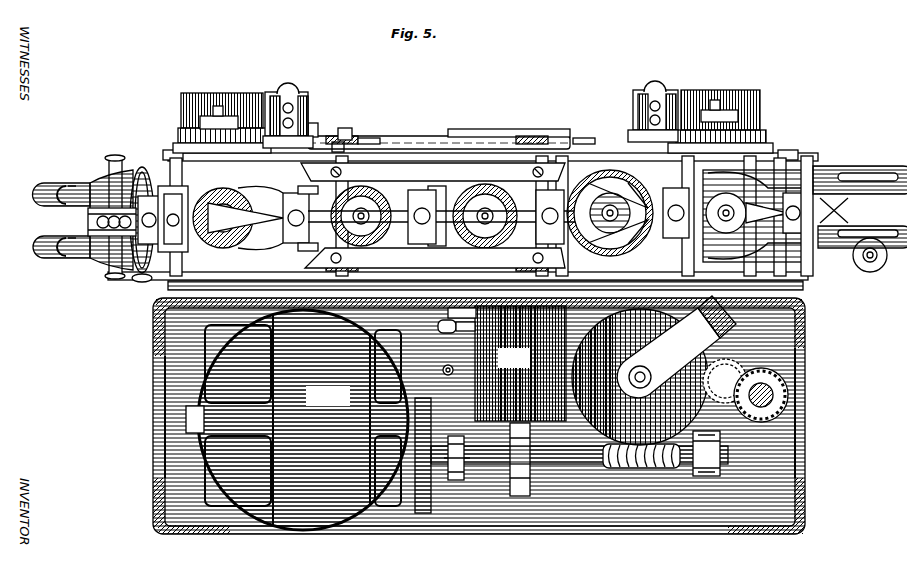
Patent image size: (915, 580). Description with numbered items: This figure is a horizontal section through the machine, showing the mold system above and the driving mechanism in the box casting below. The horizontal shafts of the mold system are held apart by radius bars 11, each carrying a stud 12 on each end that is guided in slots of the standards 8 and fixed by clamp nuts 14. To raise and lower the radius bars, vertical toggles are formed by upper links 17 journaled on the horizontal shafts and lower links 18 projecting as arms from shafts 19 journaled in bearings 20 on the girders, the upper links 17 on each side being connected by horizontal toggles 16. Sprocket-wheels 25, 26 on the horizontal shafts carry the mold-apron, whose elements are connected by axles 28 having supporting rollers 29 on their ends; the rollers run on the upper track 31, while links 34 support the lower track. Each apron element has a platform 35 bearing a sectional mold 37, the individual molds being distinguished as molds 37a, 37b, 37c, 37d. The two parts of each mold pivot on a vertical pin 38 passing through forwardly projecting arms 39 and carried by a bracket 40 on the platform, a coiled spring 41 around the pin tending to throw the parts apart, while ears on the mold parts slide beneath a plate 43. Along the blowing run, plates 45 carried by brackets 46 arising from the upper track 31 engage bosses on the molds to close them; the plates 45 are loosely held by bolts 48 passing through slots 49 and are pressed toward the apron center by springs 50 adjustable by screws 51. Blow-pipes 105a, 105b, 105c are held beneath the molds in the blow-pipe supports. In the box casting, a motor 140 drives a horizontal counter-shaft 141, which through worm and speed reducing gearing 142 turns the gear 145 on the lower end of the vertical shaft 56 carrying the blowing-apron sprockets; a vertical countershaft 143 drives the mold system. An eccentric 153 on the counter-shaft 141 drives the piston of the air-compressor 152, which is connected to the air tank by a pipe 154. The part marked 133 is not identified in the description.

The standards 8 is at (184, 120).
The radius bars 11 is at (168, 143).
The stud 12 is at (210, 105).
The clamp nuts 14 is at (224, 112).
The horizontal toggles 16 is at (440, 128).
The upper links 17 is at (368, 128).
The lower links 18 is at (643, 122).
The shafts 19 is at (471, 93).
The bearings 20 is at (312, 128).
The sprocket-wheel 25 is at (479, 416).
The sprocket-wheel 26 is at (140, 147).
The axles 28 is at (108, 276).
The supporting rollers 29 is at (108, 147).
The upper track 31 is at (497, 140).
The links 34 is at (152, 140).
The platform 35 is at (434, 212).
The sectional mold 37 is at (58, 250).
The sectional mold 37a is at (435, 258).
The sectional mold 37b is at (470, 238).
The sectional mold 37c is at (862, 158).
The sectional mold 37d is at (733, 221).
The vertical pin 38 is at (78, 210).
The forwardly projecting arms 39 is at (262, 200).
The bracket 40 is at (152, 219).
The coiled spring 41 is at (170, 212).
The plate 43 is at (238, 218).
The plates 45 is at (438, 216).
The brackets 46 is at (356, 128).
The bolts 48 is at (433, 172).
The slots 49 is at (391, 173).
The springs 50 is at (350, 110).
The screws 51 is at (343, 128).
The vertical shaft 56 is at (784, 388).
The blow-pipe 105a is at (356, 230).
The blow-pipe 105b is at (476, 195).
The blow-pipe 105c is at (862, 268).
The rack 133 is at (438, 439).
The motor 140 is at (297, 420).
The horizontal counter-shaft 141 is at (590, 455).
The worm and speed reducing gearing 142 is at (716, 392).
The vertical countershaft 143 is at (625, 372).
The gear 145 is at (715, 447).
The air-compressor 152 is at (520, 363).
The eccentric 153 is at (503, 470).
The pipe 154 is at (437, 326).